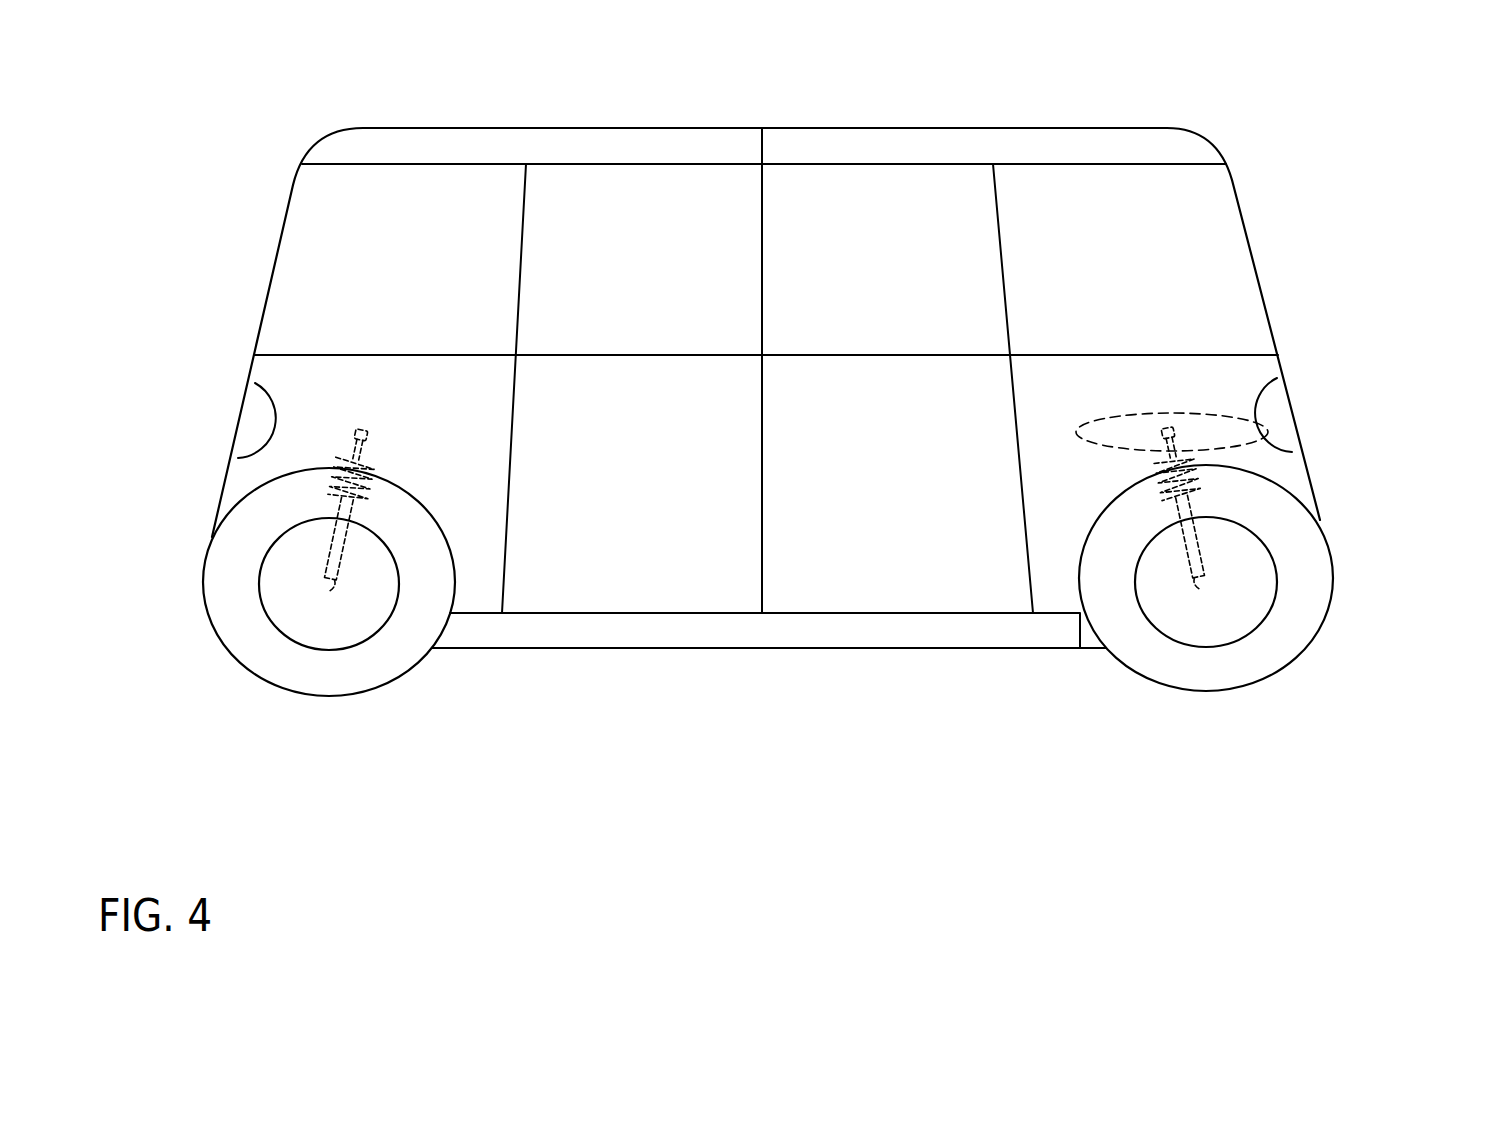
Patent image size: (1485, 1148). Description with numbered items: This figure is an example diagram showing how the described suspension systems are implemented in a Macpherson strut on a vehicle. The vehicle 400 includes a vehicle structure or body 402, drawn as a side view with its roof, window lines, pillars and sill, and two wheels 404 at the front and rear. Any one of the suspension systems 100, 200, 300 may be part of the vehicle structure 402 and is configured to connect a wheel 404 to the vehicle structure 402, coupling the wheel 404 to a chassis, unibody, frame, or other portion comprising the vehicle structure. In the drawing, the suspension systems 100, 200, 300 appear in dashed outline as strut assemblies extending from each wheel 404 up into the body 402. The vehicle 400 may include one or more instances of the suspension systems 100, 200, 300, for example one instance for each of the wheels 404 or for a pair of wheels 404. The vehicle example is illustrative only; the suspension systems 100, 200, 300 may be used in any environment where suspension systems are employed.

The vehicle 400 is at (836, 395).
The vehicle structure or body 402 is at (717, 198).
The wheel 404 is at (1313, 620).
The suspension system 100 is at (889, 469).
The suspension system 200 is at (889, 469).
The suspension system 300 is at (1203, 475).